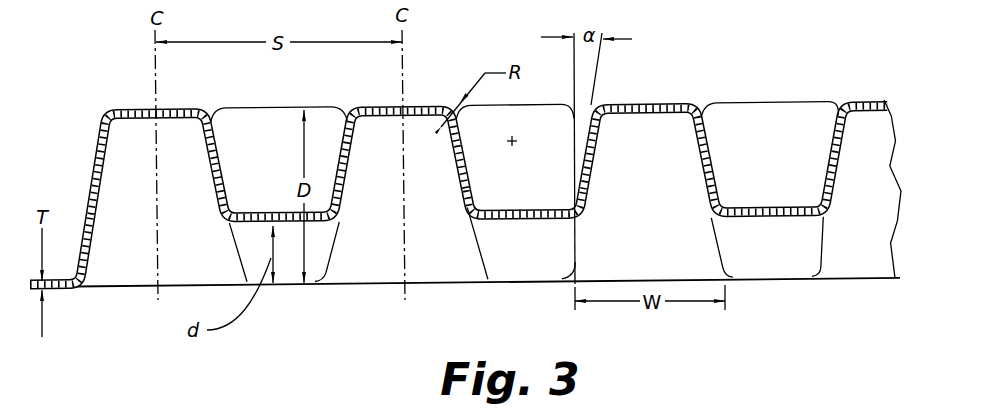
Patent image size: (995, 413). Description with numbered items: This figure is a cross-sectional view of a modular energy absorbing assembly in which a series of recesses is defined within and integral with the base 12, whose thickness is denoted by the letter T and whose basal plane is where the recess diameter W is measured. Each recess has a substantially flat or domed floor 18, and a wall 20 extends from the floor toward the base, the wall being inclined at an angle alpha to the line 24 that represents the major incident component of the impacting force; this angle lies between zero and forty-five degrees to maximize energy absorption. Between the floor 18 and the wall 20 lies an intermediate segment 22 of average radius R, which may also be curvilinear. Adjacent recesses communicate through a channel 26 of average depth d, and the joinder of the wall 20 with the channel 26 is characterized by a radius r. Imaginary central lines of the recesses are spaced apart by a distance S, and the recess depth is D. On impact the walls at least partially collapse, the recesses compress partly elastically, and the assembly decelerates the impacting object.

The base 12 is at (53, 290).
The floor 18 is at (137, 108).
The wall 20 is at (462, 172).
The intermediate segment 22 is at (478, 216).
The major incident component 24 is at (574, 73).
The channel 26 is at (571, 224).